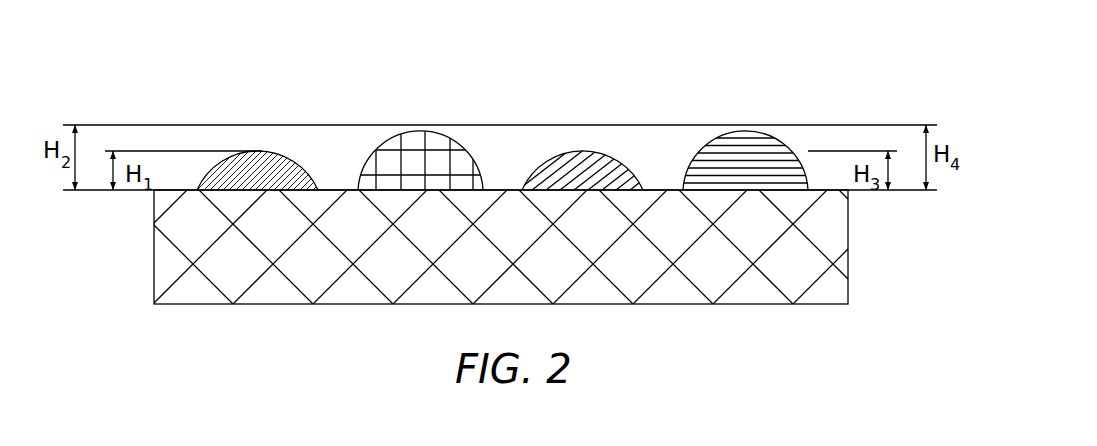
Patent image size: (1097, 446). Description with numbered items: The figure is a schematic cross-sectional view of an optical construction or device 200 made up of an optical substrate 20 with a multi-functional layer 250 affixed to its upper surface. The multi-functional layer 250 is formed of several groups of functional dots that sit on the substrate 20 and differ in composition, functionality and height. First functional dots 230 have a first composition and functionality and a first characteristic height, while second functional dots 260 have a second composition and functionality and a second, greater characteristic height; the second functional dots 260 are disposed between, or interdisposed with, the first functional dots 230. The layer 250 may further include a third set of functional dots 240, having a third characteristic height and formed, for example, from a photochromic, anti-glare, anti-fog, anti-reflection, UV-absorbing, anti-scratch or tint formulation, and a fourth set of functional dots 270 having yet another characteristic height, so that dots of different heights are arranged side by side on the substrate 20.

The optical construction 200 is at (799, 66).
The optical substrate 20 is at (797, 305).
The first functional dots 230 is at (300, 157).
The third set of functional dots 240 is at (578, 151).
The multi-functional layer 250 is at (184, 159).
The second functional dots 260 is at (465, 138).
The fourth set of functional dots 270 is at (713, 125).